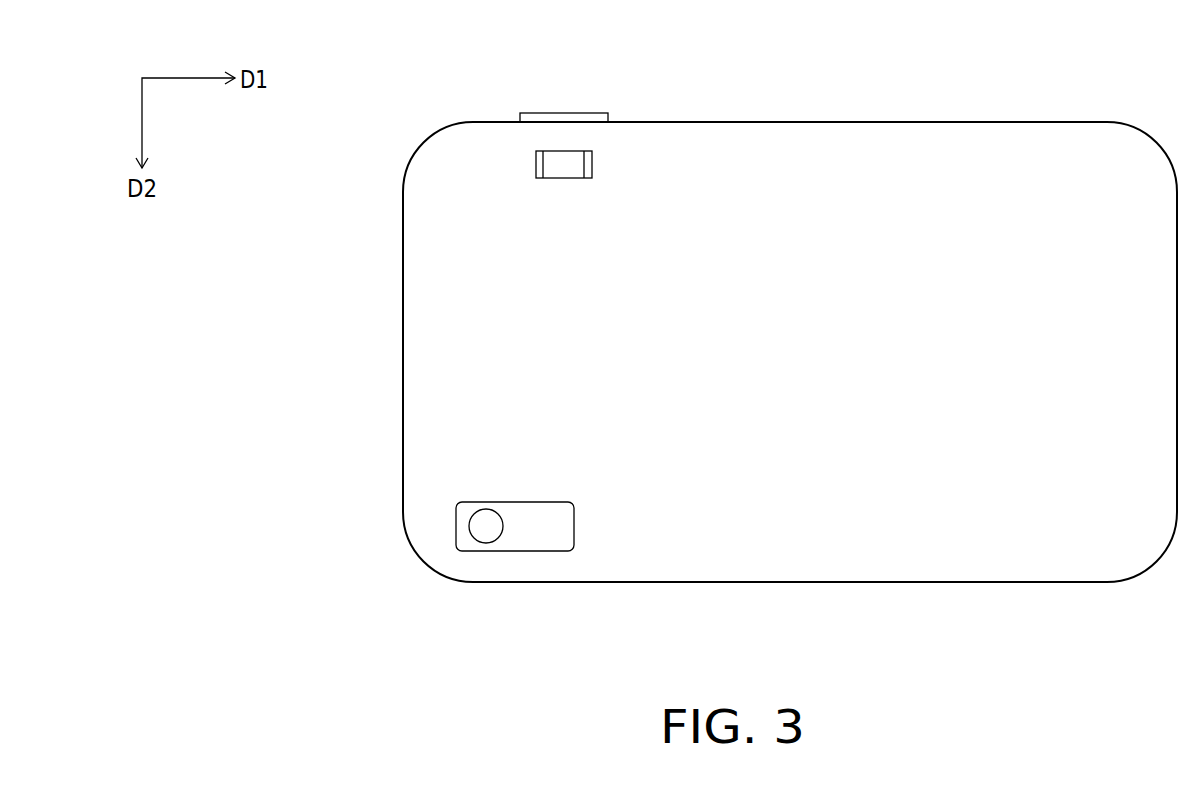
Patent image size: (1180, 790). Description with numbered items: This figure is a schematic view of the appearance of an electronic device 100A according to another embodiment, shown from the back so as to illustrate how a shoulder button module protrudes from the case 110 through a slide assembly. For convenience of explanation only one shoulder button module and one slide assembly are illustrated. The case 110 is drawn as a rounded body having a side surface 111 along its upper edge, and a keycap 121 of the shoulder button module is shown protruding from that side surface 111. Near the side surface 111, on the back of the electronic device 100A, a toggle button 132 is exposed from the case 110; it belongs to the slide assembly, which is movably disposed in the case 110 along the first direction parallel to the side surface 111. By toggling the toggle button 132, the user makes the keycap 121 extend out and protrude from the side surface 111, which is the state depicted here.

The electronic device 100A is at (347, 569).
The case 110 is at (745, 562).
The side surface 111 is at (723, 121).
The keycap 121 is at (552, 115).
The toggle button 132 is at (553, 167).